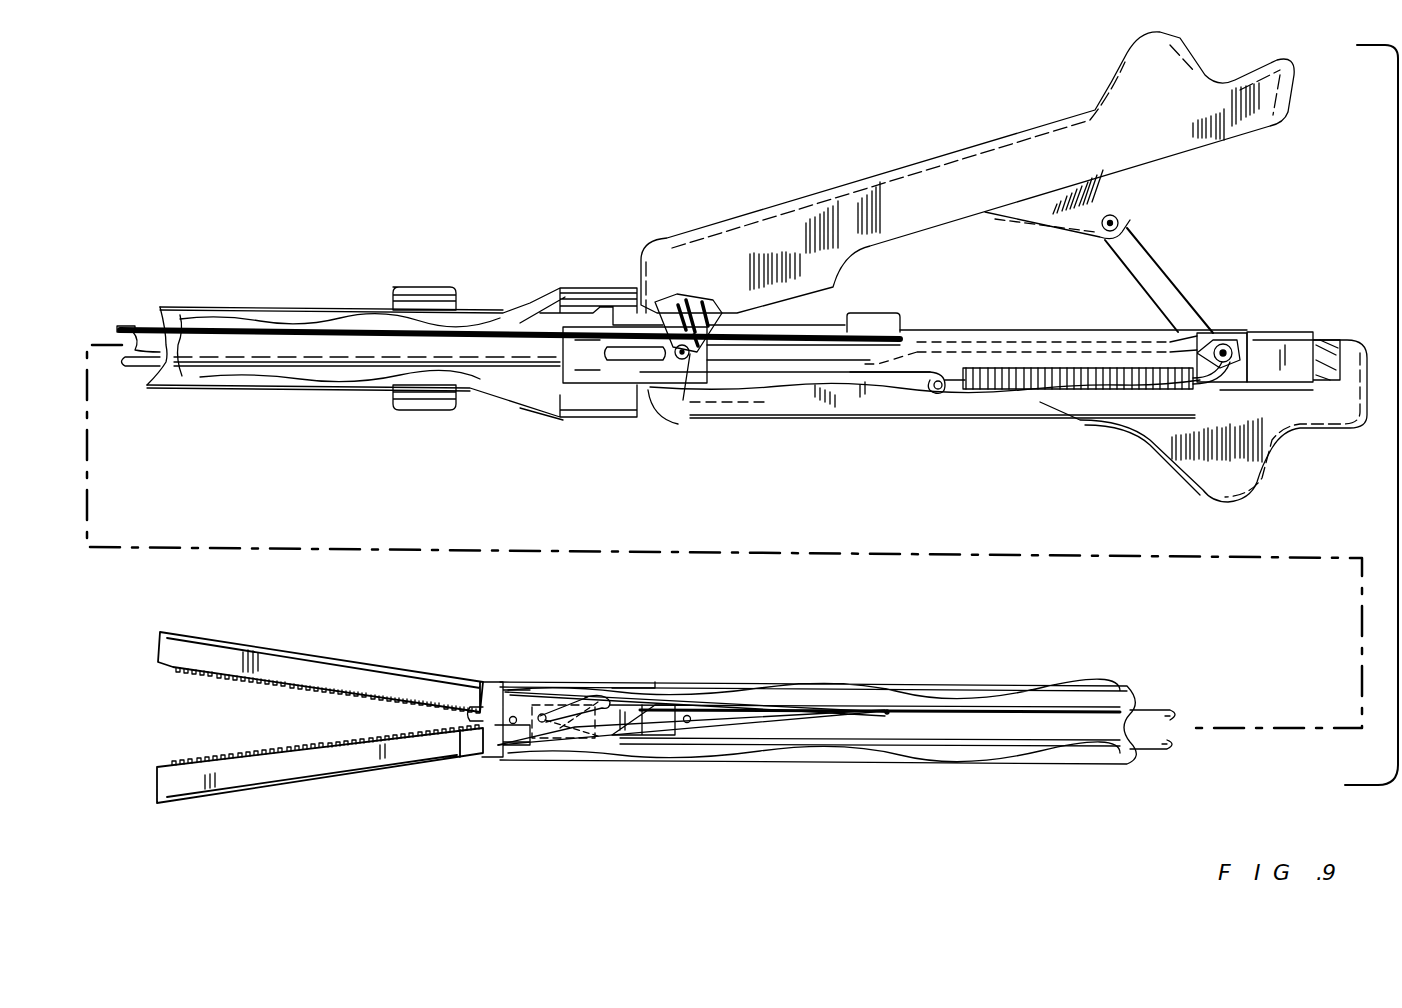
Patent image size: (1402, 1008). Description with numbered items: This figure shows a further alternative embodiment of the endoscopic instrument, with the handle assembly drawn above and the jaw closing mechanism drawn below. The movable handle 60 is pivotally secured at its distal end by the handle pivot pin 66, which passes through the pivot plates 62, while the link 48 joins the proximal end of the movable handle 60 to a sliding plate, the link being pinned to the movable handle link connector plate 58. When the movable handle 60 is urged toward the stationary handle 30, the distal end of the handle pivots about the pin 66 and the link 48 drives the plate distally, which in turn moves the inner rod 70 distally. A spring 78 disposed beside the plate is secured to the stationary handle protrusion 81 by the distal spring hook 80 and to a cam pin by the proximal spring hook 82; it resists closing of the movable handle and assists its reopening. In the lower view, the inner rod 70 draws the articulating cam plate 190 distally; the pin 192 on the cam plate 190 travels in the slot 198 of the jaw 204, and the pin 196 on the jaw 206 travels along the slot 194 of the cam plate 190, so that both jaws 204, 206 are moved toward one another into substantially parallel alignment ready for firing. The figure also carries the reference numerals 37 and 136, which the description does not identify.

The stationary handle 30 is at (1185, 460).
The actuation rods 37 is at (786, 700).
The link 48 is at (1155, 262).
The movable handle link connector plate 58 is at (1110, 192).
The movable handle 60 is at (838, 185).
The pivot plates 62 is at (677, 300).
The handle pivot pin 66 is at (682, 360).
The inner rod 70 is at (972, 720).
The spring 78 is at (1045, 392).
The distal spring hook 80 is at (946, 395).
The stationary handle protrusion 81 is at (950, 342).
The proximal spring hook 82 is at (1231, 333).
The stop tab 136 is at (885, 312).
The articulating cam plate 190 is at (665, 705).
The pin 192 is at (540, 715).
The slot 194 is at (575, 740).
The pin 196 is at (598, 745).
The slot 198 is at (588, 700).
The jaw 204 is at (300, 772).
The jaw 206 is at (305, 665).